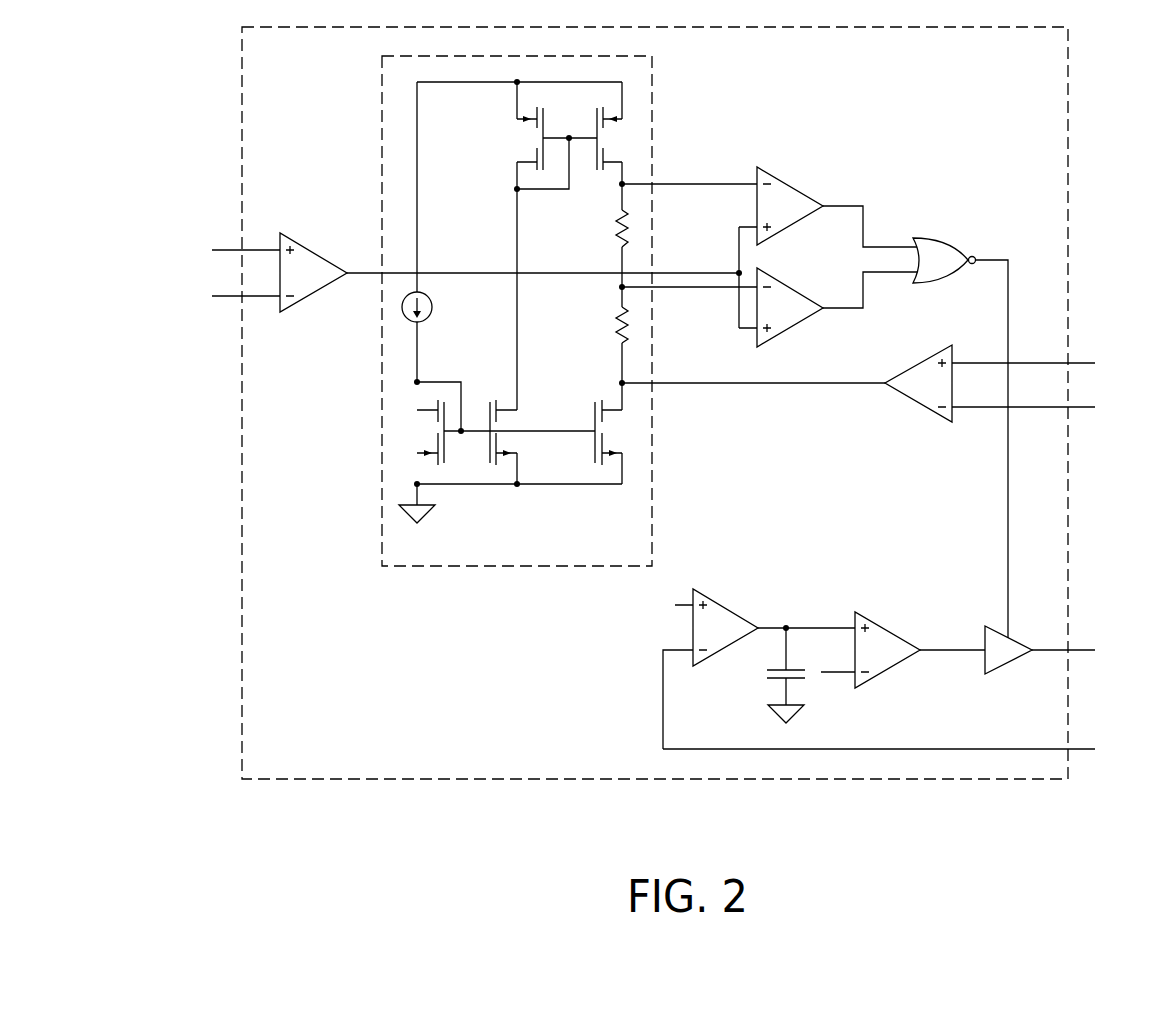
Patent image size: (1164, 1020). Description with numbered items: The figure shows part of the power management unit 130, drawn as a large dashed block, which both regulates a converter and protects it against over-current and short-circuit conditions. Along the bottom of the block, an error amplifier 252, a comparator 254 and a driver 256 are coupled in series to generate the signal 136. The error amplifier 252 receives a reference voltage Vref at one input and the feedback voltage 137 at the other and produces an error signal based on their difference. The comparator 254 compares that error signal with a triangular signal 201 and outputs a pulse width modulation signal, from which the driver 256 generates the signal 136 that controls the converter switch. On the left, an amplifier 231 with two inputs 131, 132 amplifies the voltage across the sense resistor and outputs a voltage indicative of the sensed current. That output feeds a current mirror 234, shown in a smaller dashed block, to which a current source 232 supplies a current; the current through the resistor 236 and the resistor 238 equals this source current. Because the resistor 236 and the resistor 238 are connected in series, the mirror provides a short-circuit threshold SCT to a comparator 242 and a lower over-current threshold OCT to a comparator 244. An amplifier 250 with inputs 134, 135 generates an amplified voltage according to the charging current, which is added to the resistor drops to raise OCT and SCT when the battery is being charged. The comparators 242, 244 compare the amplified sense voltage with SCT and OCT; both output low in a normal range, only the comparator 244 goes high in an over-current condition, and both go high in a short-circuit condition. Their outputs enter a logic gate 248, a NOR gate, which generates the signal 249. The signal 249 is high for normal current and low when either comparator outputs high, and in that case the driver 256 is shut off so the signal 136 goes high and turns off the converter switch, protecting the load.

The power management unit 130 is at (242, 63).
The first input terminal 131 is at (226, 250).
The second input terminal 132 is at (226, 296).
The comparator input terminal 134 is at (1085, 363).
The comparator input terminal 135 is at (1085, 407).
The signal 136 is at (1085, 650).
The feedback voltage 137 is at (1085, 749).
The triangular signal 201 is at (828, 673).
The amplifier 231 is at (301, 243).
The current source 232 is at (430, 300).
The current mirror 234 is at (382, 135).
The resistor 236 is at (614, 219).
The resistor 238 is at (613, 316).
The comparator 242 is at (775, 173).
The comparator 244 is at (775, 275).
The logic gate 248 is at (928, 238).
The signal 249 is at (1008, 283).
The amplifier 250 is at (924, 406).
The error amplifier 252 is at (716, 602).
The comparator 254 is at (873, 622).
The driver 256 is at (996, 669).